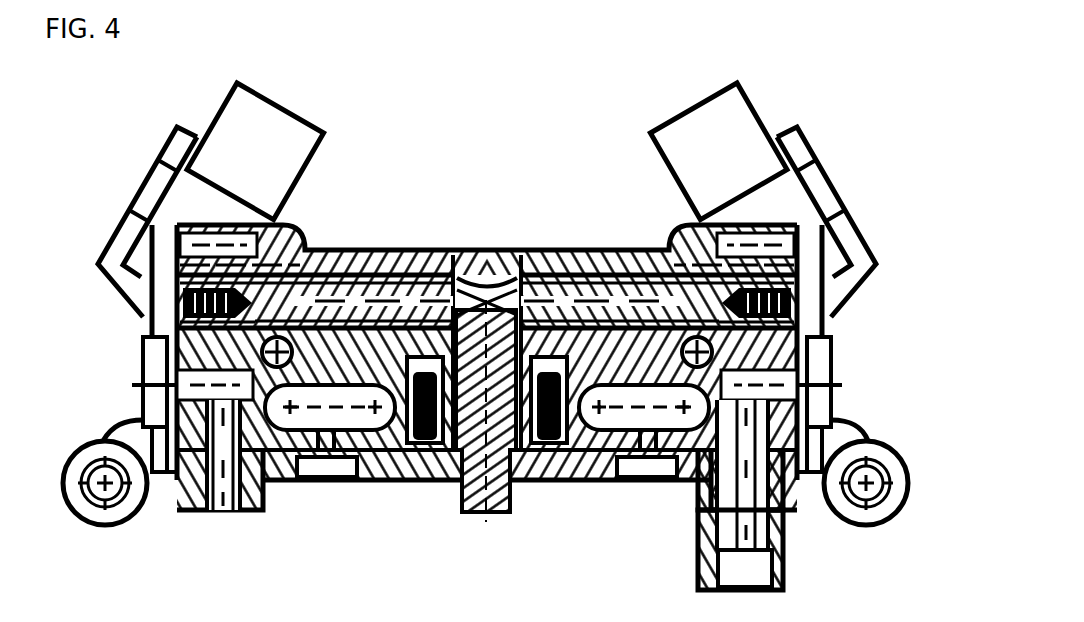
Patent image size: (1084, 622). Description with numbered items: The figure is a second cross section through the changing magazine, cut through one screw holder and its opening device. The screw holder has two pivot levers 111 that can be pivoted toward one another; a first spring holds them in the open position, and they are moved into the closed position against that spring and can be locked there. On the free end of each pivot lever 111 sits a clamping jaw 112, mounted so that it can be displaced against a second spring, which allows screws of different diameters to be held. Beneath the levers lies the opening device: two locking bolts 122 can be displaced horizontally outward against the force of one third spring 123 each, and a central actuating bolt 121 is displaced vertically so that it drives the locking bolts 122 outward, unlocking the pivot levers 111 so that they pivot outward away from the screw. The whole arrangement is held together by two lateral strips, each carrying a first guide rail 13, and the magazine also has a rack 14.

The first guide rail 13 is at (118, 512).
The rack 14 is at (710, 565).
The pivot lever 111 is at (150, 173).
The clamping jaw 112 is at (263, 118).
The actuating bolt 121 is at (507, 503).
The locking bolt 122 is at (370, 250).
The third spring 123 is at (143, 317).